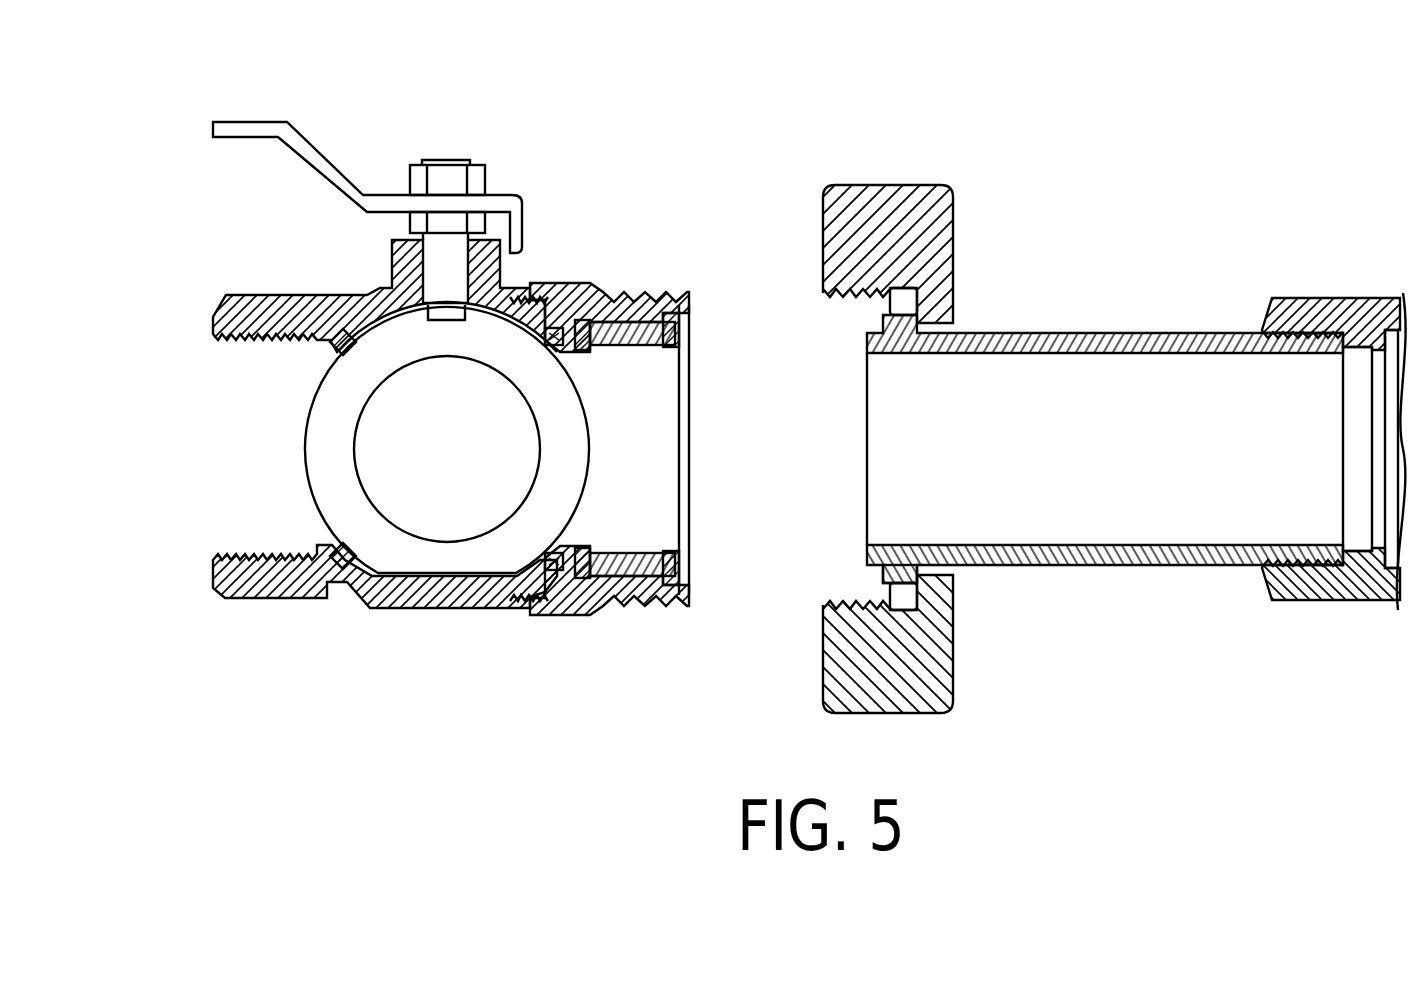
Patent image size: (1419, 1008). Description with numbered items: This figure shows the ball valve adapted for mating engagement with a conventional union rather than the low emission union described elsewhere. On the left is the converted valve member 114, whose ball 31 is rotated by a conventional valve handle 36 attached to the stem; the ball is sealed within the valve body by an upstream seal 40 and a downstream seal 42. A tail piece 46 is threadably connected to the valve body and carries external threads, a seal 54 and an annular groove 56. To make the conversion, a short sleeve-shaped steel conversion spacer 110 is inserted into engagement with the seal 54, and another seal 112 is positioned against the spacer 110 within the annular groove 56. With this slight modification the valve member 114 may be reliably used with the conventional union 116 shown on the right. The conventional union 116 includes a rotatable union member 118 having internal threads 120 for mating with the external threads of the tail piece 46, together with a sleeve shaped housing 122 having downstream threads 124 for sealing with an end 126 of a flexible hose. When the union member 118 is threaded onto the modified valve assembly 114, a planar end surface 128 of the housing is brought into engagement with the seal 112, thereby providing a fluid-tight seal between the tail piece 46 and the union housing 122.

The ball 31 is at (572, 468).
The valve handle 36 is at (292, 128).
The upstream seal 40 is at (340, 567).
The downstream seal 42 is at (570, 547).
The tail piece 46 is at (567, 604).
The seal 54 is at (580, 352).
The annular groove 56 is at (680, 313).
The conversion spacer 110 is at (647, 347).
The seal 112 is at (672, 566).
The converted valve member 114 is at (493, 126).
The conventional union 116 is at (1080, 185).
The rotatable union member 118 is at (942, 240).
The internal threads 120 is at (850, 297).
The sleeve shaped housing 122 is at (1108, 347).
The downstream threads 124 is at (1300, 340).
The end of flexible hose 126 is at (1362, 308).
The planar end surface 128 is at (883, 566).